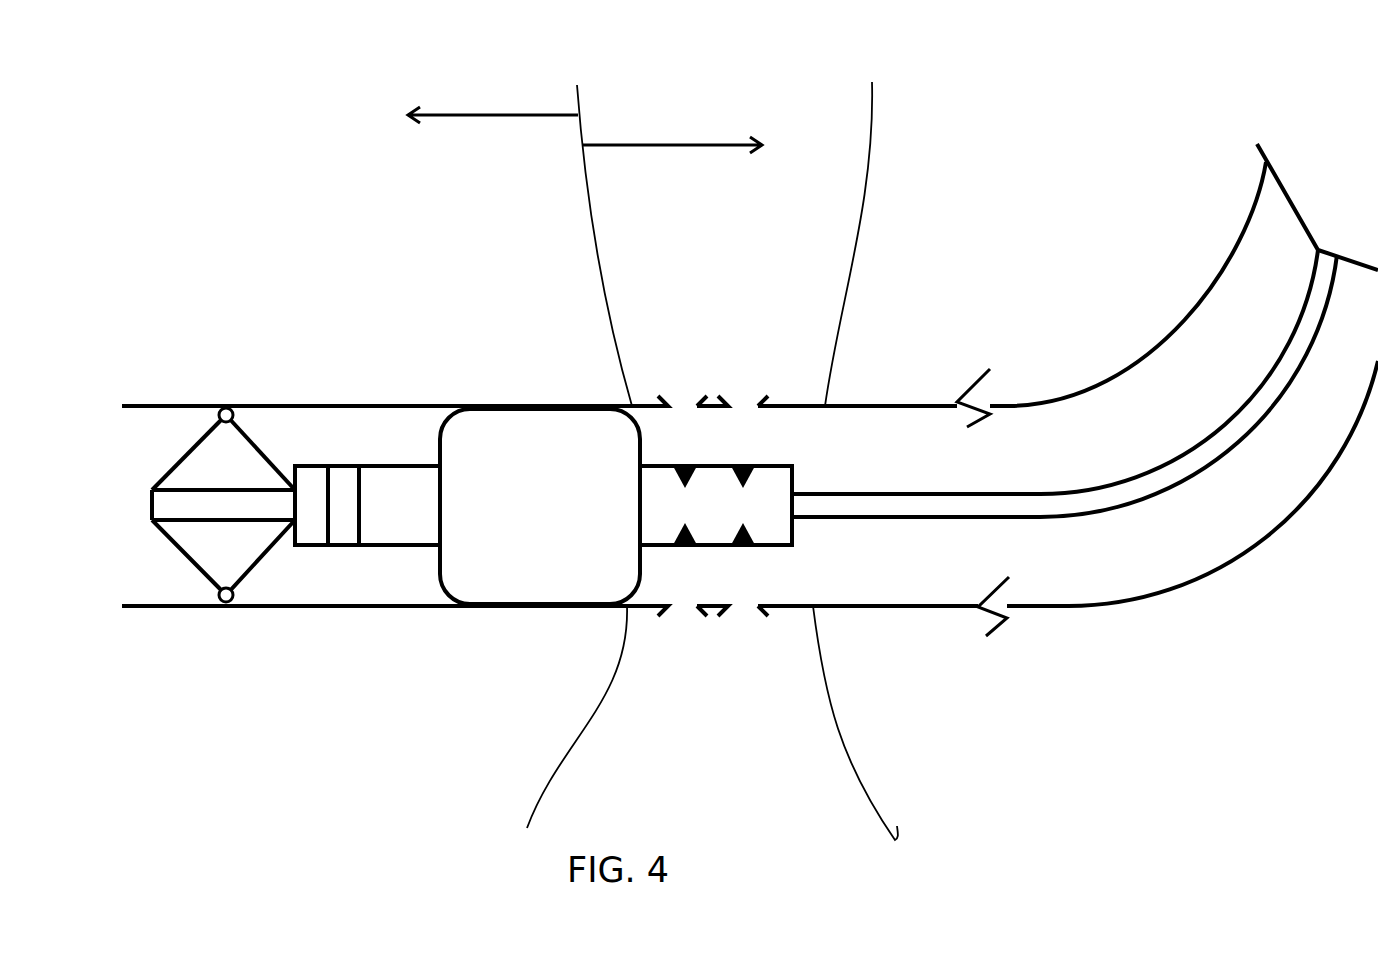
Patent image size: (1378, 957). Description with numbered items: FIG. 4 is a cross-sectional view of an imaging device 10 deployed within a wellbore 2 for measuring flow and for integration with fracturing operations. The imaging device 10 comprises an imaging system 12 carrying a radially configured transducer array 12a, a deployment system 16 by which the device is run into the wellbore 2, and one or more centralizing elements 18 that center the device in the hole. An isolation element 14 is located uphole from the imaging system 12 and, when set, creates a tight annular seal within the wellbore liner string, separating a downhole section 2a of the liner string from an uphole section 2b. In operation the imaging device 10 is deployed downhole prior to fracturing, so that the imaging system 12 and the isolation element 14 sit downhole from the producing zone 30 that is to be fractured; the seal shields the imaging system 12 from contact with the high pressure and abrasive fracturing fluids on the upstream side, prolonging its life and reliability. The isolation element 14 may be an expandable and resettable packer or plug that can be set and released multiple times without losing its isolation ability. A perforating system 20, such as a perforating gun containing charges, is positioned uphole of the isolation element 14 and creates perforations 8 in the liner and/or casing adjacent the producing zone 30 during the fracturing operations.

The wellbore 2 is at (240, 434).
The downhole section 2a is at (480, 115).
The uphole section 2b is at (630, 145).
The perforations 8 is at (681, 406).
The imaging device 10 is at (507, 322).
The imaging system 12 is at (375, 509).
The radially configured transducer array 12a is at (343, 466).
The isolation element 14 is at (498, 606).
The deployment system 16 is at (883, 494).
The centralizing elements 18 is at (259, 443).
The perforating system 20 is at (790, 545).
The producing zone 30 is at (740, 238).